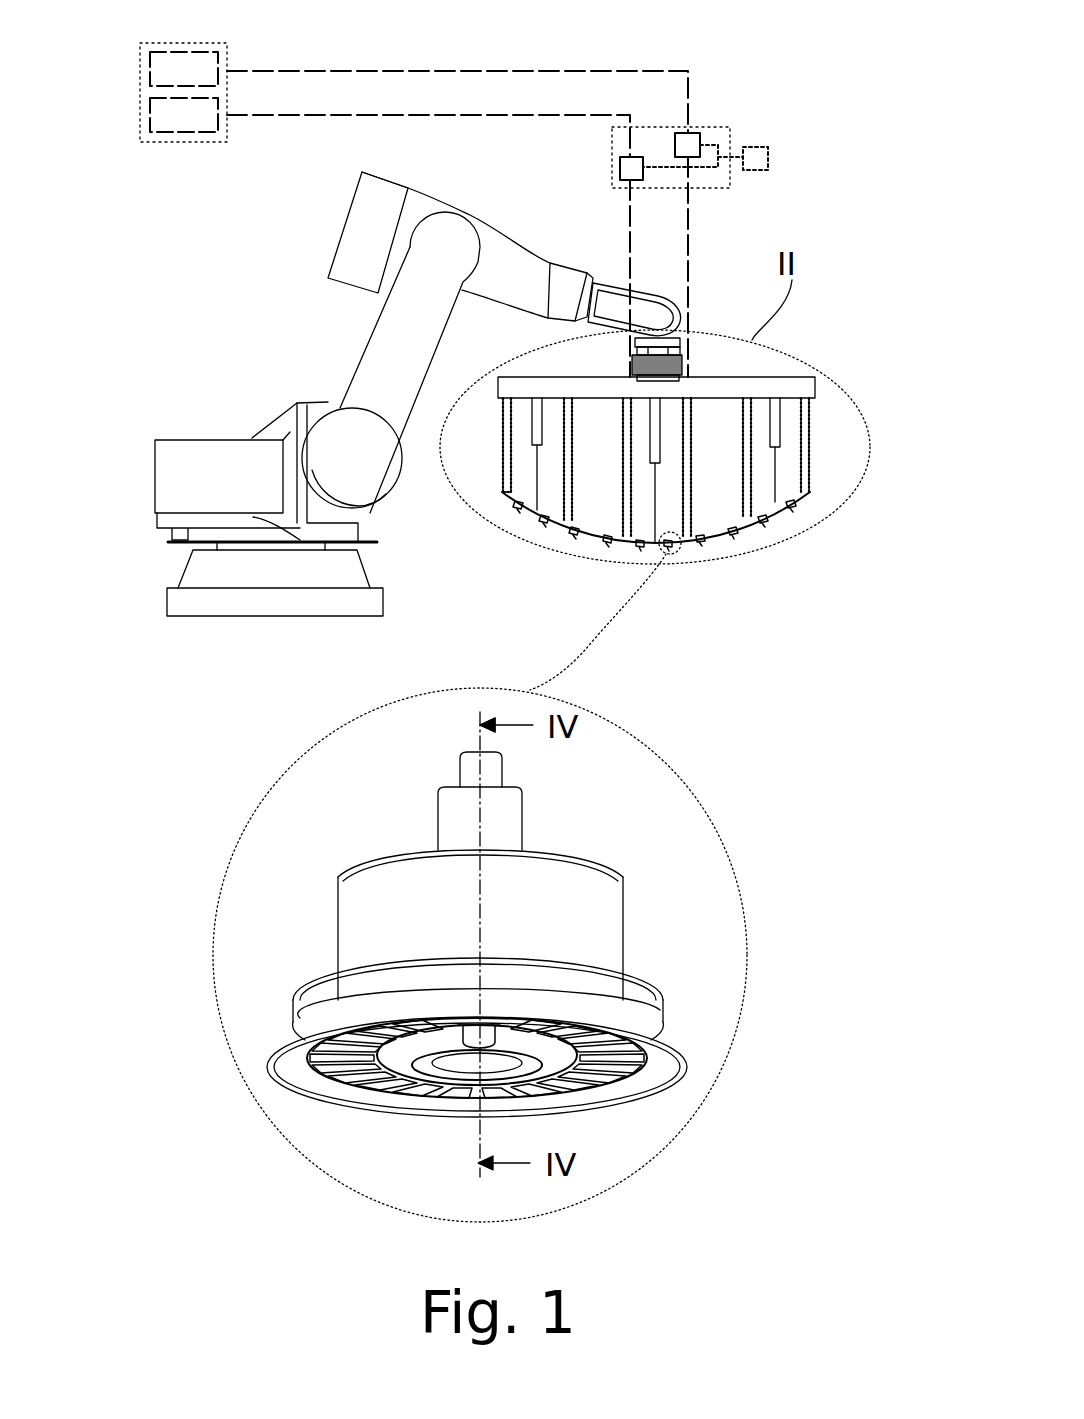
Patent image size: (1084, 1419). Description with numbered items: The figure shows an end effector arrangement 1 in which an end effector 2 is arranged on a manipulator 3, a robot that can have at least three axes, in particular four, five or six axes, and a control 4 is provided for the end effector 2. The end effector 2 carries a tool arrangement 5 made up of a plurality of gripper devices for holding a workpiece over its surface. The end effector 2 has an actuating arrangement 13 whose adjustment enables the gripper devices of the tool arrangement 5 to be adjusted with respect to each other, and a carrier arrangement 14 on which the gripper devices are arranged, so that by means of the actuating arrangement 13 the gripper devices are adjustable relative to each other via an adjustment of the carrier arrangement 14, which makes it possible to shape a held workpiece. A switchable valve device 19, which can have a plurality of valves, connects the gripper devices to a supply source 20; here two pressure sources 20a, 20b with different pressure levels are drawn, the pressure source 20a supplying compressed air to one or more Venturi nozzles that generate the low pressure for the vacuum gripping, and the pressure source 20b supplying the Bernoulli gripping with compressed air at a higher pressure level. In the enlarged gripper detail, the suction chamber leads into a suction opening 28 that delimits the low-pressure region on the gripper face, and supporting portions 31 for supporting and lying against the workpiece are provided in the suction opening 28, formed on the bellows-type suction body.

The end effector arrangement 1 is at (858, 80).
The end effector 2 is at (832, 352).
The manipulator 3 is at (390, 370).
The control 4 is at (770, 157).
The tool arrangement 5 is at (719, 483).
The actuating arrangement 13 is at (812, 425).
The carrier arrangement 14 is at (812, 488).
The switchable valve device 19 is at (712, 127).
The supply source 20 is at (147, 121).
The pressure source 20a is at (175, 71).
The pressure source 20b is at (167, 115).
The suction opening 28 is at (657, 1073).
The supporting portions 31 is at (423, 1095).